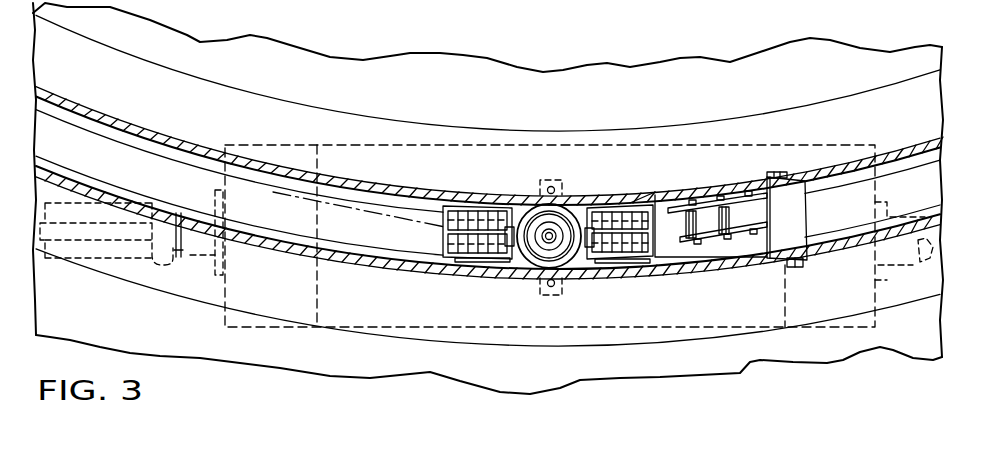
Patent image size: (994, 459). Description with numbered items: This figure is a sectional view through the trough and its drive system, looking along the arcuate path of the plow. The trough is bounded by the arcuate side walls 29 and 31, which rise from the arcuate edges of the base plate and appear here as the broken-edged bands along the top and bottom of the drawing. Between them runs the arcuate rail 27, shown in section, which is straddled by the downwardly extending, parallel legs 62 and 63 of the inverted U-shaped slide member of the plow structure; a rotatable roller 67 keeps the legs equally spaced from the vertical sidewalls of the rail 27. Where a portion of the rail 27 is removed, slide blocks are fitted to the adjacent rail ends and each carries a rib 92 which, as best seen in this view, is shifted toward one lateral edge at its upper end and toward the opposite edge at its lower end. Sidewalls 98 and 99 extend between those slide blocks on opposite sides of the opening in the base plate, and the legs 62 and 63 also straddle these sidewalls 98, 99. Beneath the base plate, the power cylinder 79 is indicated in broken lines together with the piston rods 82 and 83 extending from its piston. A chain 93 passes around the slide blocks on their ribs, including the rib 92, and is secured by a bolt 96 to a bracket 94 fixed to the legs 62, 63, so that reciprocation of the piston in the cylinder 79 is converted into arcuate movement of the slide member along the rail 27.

The arcuate side wall 29 is at (545, 98).
The arcuate side wall 31 is at (543, 367).
The arcuate rail 27 is at (338, 218).
The leg 62 is at (413, 193).
The leg 63 is at (407, 270).
The rotatable roller 67 is at (563, 213).
The power cylinder 79 is at (467, 327).
The piston rod 82 is at (198, 247).
The piston rod 83 is at (907, 265).
The rib 92 is at (452, 227).
The chain 93 is at (705, 228).
The bracket 94 is at (787, 220).
The bolt 96 is at (776, 171).
The sidewall 98 is at (517, 212).
The sidewall 99 is at (524, 262).